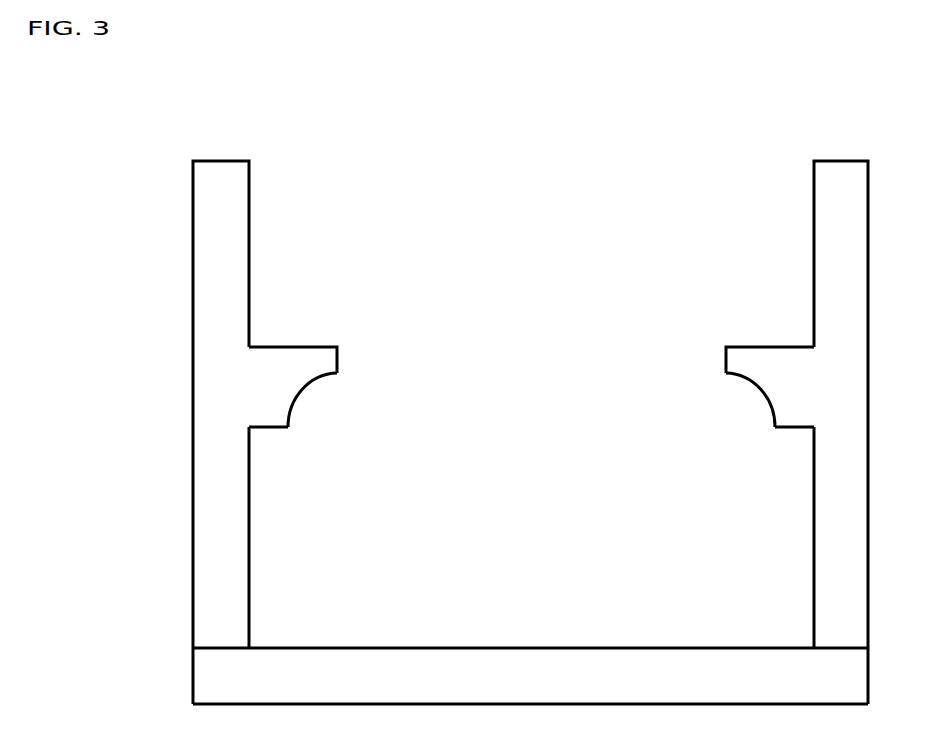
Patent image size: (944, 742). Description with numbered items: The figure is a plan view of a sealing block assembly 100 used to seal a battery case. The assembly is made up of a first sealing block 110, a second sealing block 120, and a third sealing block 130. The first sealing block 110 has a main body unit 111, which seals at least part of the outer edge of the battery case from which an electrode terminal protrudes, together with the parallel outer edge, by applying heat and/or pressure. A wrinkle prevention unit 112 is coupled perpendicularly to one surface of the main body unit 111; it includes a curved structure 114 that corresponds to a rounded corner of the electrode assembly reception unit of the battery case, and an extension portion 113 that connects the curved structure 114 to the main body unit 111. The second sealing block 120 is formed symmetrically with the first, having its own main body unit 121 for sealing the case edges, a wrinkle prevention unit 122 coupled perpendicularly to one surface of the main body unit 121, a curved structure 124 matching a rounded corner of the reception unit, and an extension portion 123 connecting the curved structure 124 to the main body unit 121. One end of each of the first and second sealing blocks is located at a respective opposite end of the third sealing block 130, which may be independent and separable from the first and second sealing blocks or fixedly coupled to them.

The sealing block assembly 100 is at (130, 187).
The first sealing block 110 is at (319, 432).
The main body unit 111 is at (249, 293).
The wrinkle prevention unit 112 is at (337, 358).
The extension portion 113 is at (265, 427).
The curved structure 114 is at (303, 390).
The second sealing block 120 is at (743, 432).
The main body unit 121 is at (782, 432).
The wrinkle prevention unit 122 is at (734, 343).
The extension portion 123 is at (783, 468).
The curved structure 124 is at (736, 419).
The third sealing block 130 is at (465, 648).